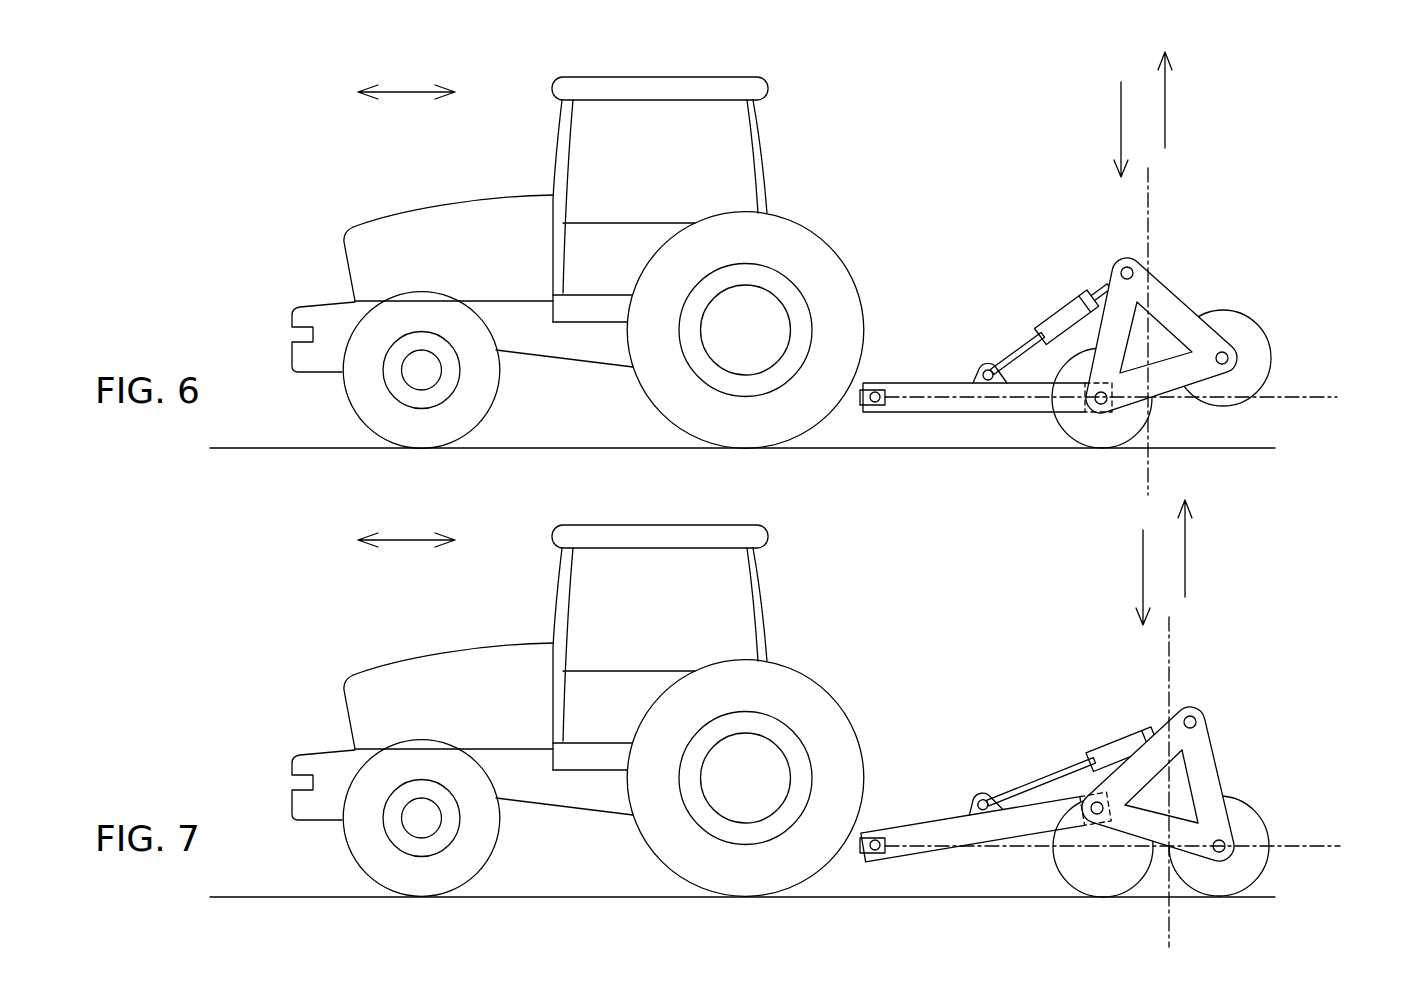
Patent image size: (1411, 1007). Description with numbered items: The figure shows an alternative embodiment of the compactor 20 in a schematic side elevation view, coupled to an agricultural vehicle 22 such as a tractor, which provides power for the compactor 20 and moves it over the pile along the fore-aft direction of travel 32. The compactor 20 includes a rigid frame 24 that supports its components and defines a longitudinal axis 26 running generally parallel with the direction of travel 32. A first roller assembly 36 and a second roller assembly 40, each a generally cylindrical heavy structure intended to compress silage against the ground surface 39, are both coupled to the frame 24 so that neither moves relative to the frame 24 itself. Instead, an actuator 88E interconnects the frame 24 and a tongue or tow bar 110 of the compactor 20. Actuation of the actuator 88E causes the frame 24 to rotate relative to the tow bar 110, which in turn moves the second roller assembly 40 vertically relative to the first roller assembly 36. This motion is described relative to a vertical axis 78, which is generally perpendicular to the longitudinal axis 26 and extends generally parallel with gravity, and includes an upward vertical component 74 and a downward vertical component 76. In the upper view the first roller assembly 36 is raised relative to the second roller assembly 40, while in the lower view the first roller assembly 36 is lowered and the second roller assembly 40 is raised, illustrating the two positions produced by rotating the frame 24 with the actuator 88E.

In FIG. 6, the compactor 20 is at (1118, 274).
In FIG. 7, the compactor 20 is at (1116, 723).
In FIG. 6, the agricultural vehicle 22 is at (662, 78).
In FIG. 7, the agricultural vehicle 22 is at (662, 526).
In FIG. 6, the frame 24 is at (1163, 303).
In FIG. 7, the frame 24 is at (1200, 763).
In FIG. 6, the longitudinal axis 26 is at (1317, 392).
In FIG. 7, the longitudinal axis 26 is at (1317, 842).
In FIG. 6, the fore-aft direction of travel 32 is at (412, 92).
In FIG. 7, the fore-aft direction of travel 32 is at (412, 540).
In FIG. 6, the first roller assembly 36 is at (1077, 423).
In FIG. 7, the first roller assembly 36 is at (1095, 853).
In FIG. 6, the ground surface 39 is at (1275, 448).
In FIG. 7, the ground surface 39 is at (1275, 897).
In FIG. 6, the second roller assembly 40 is at (1245, 331).
In FIG. 7, the second roller assembly 40 is at (1240, 807).
In FIG. 6, the upward vertical component 74 is at (1165, 90).
In FIG. 7, the upward vertical component 74 is at (1185, 540).
In FIG. 6, the downward vertical component 76 is at (1121, 137).
In FIG. 7, the downward vertical component 76 is at (1143, 586).
In FIG. 6, the vertical axis 78 is at (1148, 222).
In FIG. 7, the vertical axis 78 is at (1169, 670).
In FIG. 6, the actuator 88E is at (1063, 308).
In FIG. 7, the actuator 88E is at (1110, 745).
In FIG. 6, the tow bar 110 is at (897, 383).
In FIG. 7, the tow bar 110 is at (897, 826).